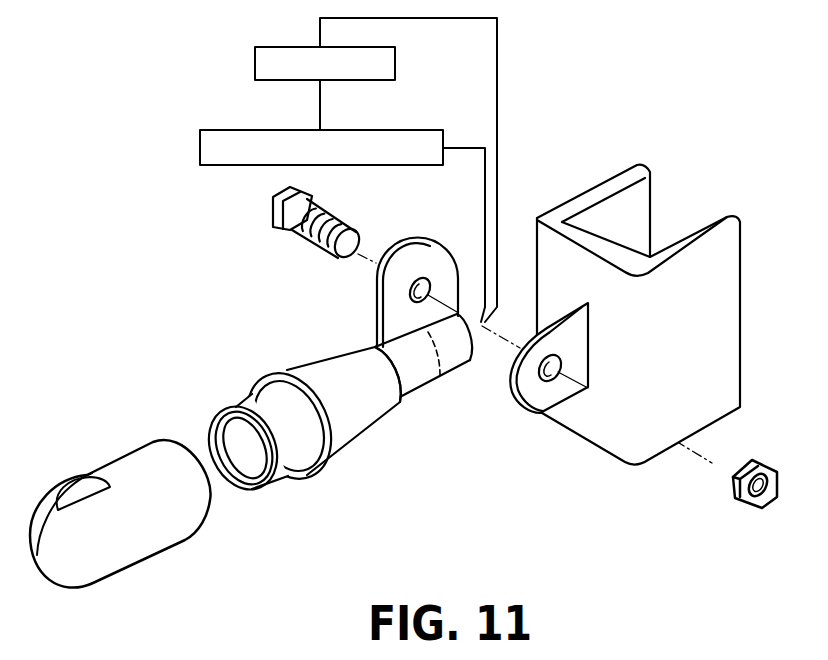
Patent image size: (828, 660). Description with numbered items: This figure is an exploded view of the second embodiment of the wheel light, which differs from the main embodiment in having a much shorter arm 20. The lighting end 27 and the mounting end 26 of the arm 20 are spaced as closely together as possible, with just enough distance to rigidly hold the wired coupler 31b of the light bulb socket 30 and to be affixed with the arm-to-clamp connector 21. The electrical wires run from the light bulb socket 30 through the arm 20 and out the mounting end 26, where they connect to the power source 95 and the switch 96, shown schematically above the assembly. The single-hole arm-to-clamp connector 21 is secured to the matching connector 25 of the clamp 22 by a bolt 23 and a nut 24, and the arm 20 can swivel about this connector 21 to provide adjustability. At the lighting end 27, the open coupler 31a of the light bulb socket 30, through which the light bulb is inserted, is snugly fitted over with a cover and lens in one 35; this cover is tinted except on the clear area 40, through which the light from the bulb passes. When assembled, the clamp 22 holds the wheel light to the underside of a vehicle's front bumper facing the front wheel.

The arm 20 is at (445, 362).
The arm-to-clamp connector 21 is at (387, 305).
The clamp 22 is at (632, 173).
The bolt 23 is at (271, 213).
The nut 24 is at (740, 497).
The matching connector 25 is at (547, 393).
The mounting end 26 is at (467, 360).
The lighting end 27 is at (400, 404).
The light bulb socket 30 is at (328, 373).
The open coupler 31a is at (260, 408).
The wired coupler 31b is at (417, 377).
The cover and lens in one 35 is at (148, 530).
The clear area 40 is at (42, 518).
The power source 95 is at (200, 148).
The switch 96 is at (255, 62).